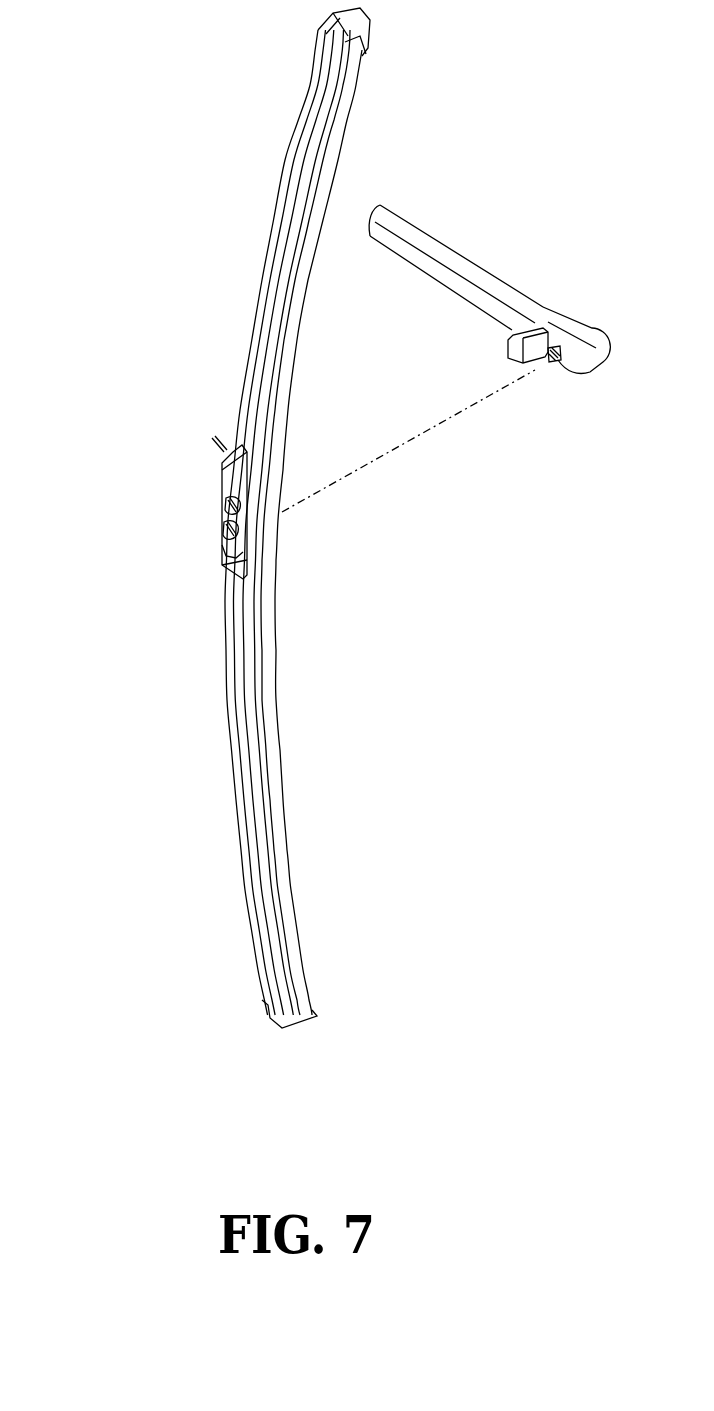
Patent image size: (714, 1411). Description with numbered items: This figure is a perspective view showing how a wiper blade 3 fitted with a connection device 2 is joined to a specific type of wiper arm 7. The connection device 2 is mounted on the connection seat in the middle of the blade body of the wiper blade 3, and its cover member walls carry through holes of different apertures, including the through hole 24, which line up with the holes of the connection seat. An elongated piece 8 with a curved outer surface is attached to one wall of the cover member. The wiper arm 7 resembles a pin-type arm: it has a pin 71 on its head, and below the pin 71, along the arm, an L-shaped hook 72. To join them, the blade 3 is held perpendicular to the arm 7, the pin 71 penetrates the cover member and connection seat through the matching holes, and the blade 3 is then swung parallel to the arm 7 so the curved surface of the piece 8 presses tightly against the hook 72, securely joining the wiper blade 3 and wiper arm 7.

The connection device 2 is at (217, 443).
The wiper blade 3 is at (275, 595).
The wiper arm 7 is at (509, 300).
The elongated piece 8 is at (222, 510).
The through hole 24 is at (212, 548).
The pin 71 is at (553, 372).
The L-shaped hook 72 is at (507, 353).